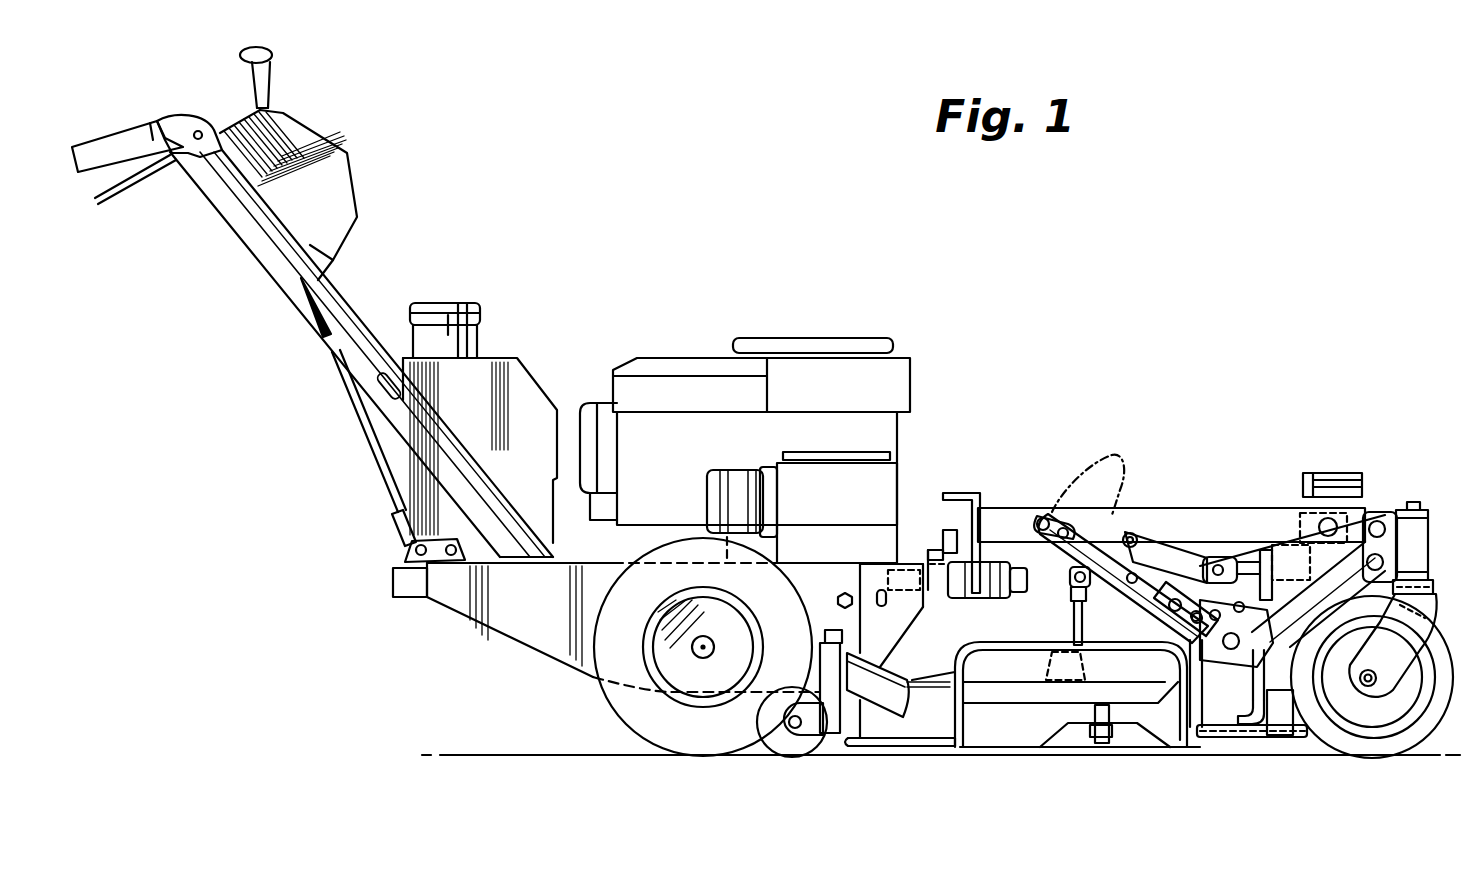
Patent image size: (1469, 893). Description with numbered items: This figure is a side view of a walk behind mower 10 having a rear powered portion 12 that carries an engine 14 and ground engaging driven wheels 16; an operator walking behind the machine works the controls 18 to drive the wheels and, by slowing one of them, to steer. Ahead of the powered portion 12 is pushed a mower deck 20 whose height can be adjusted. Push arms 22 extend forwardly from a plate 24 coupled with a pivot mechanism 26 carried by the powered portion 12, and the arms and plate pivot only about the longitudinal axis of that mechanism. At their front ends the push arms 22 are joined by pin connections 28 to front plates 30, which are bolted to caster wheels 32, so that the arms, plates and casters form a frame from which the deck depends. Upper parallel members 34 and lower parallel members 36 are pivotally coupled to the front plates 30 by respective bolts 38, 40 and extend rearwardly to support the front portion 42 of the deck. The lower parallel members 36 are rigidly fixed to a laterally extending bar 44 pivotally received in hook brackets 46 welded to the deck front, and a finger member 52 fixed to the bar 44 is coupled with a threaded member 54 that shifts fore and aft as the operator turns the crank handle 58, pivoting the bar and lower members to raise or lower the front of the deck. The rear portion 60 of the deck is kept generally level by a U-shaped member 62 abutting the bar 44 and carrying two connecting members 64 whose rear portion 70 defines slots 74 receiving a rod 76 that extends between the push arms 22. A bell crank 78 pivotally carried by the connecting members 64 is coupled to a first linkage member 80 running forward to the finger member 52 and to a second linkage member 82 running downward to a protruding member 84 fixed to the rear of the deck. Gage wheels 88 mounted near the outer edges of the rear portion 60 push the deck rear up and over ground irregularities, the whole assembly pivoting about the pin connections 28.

The walk behind mower 10 is at (1086, 290).
The rear powered portion 12 is at (715, 290).
The engine 14 is at (838, 337).
The ground engaging driven wheels 16 is at (610, 701).
The controls 18 is at (100, 200).
The mower deck 20 is at (1198, 742).
The push arms 22 is at (1008, 518).
The plate 24 is at (980, 492).
The pivot mechanism 26 is at (920, 575).
The pin connections 28 is at (1323, 518).
The front plates 30 is at (1364, 513).
The caster wheels 32 is at (1385, 742).
The upper parallel members 34 is at (1315, 536).
The lower parallel members 36 is at (1318, 600).
The bolt 38 is at (1383, 558).
The bolt 40 is at (1432, 580).
The front portion of the mower deck 42 is at (1257, 738).
The bar 44 is at (1229, 667).
The hook brackets 46 is at (1275, 693).
The finger member 52 is at (1260, 552).
The threaded member 54 is at (1214, 554).
The crank handle 58 is at (1350, 473).
The rear portion of the deck 60 is at (885, 748).
The U-shaped member 62 is at (1172, 642).
The connecting members 64 is at (1138, 608).
The rear portion of the connecting members 70 is at (1068, 508).
The slots 74 is at (1117, 500).
The rod 76 is at (1042, 515).
The bell crank 78 is at (1133, 533).
The first linkage member 80 is at (1172, 556).
The second linkage member 82 is at (1072, 597).
The protruding member 84 is at (1048, 665).
The gage wheels 88 is at (783, 748).